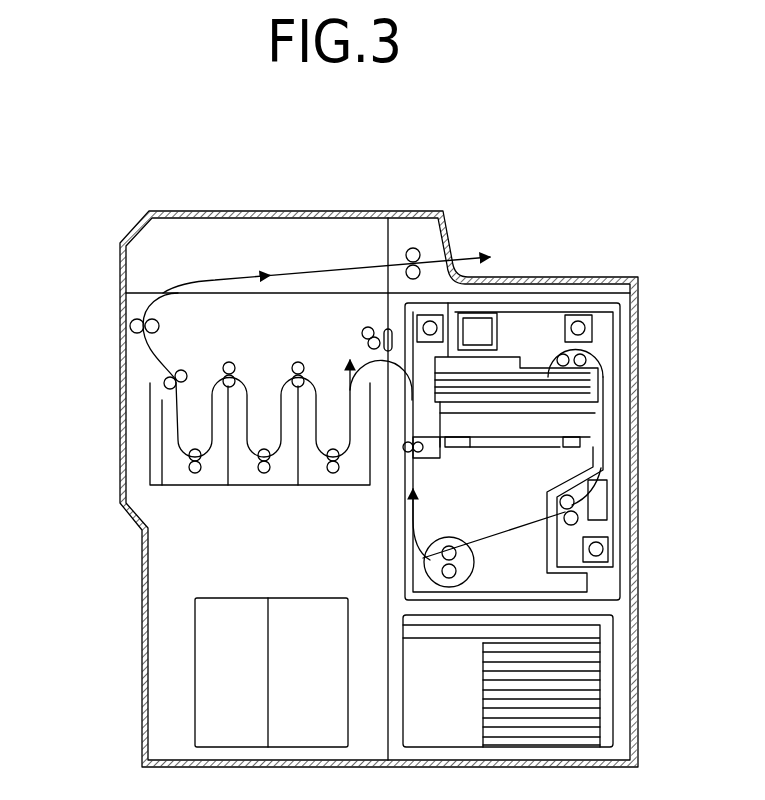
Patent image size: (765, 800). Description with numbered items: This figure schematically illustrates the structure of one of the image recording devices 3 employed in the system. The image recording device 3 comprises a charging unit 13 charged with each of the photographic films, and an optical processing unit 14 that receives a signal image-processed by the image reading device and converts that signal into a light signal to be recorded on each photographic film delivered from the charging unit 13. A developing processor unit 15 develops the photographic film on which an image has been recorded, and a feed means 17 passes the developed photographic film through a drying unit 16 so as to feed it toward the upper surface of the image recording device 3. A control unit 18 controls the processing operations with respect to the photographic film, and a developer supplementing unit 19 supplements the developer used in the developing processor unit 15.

The image recording device 3 is at (405, 188).
The charging unit 13 is at (537, 368).
The optical processing unit 14 is at (575, 425).
The developing processor unit 15 is at (183, 368).
The drying unit 16 is at (158, 261).
The feed means 17 is at (305, 268).
The control unit 18 is at (603, 678).
The developer supplementing unit 19 is at (212, 662).